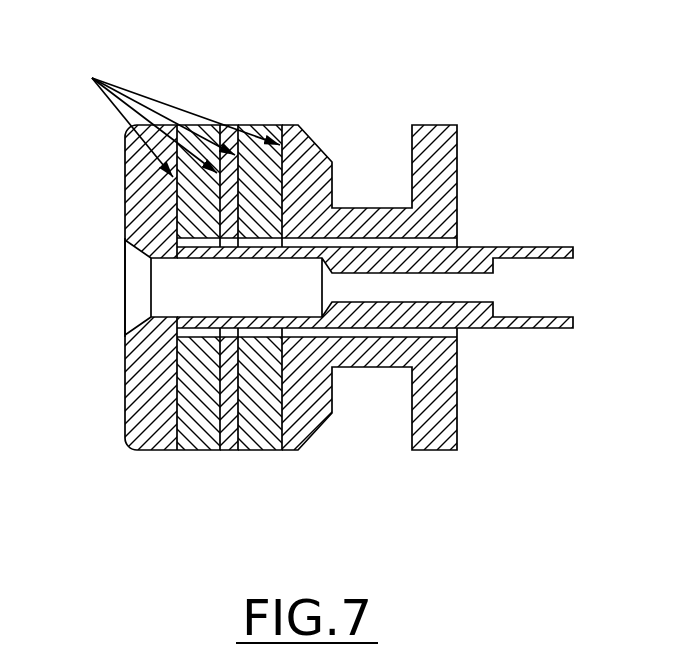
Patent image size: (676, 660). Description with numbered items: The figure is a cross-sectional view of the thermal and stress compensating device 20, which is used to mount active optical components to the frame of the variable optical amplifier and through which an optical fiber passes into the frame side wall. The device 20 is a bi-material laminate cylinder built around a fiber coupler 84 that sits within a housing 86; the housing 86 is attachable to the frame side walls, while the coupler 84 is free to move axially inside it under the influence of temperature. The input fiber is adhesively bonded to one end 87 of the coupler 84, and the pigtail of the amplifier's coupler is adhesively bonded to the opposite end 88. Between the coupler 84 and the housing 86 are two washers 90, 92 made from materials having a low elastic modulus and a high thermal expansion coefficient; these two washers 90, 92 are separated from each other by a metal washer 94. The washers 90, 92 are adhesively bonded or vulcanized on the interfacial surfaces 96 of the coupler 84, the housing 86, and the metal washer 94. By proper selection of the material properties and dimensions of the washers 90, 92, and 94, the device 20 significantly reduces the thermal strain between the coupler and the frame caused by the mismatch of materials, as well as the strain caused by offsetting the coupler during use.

The thermal and stress compensating device 20 is at (247, 75).
The fiber coupler 84 is at (147, 350).
The housing 86 is at (438, 157).
The end of coupler 87 is at (546, 260).
The opposite end of coupler 88 is at (150, 255).
The washer 90 is at (192, 437).
The washer 92 is at (265, 437).
The metal washer 94 is at (230, 437).
The interfacial surfaces 96 is at (170, 119).